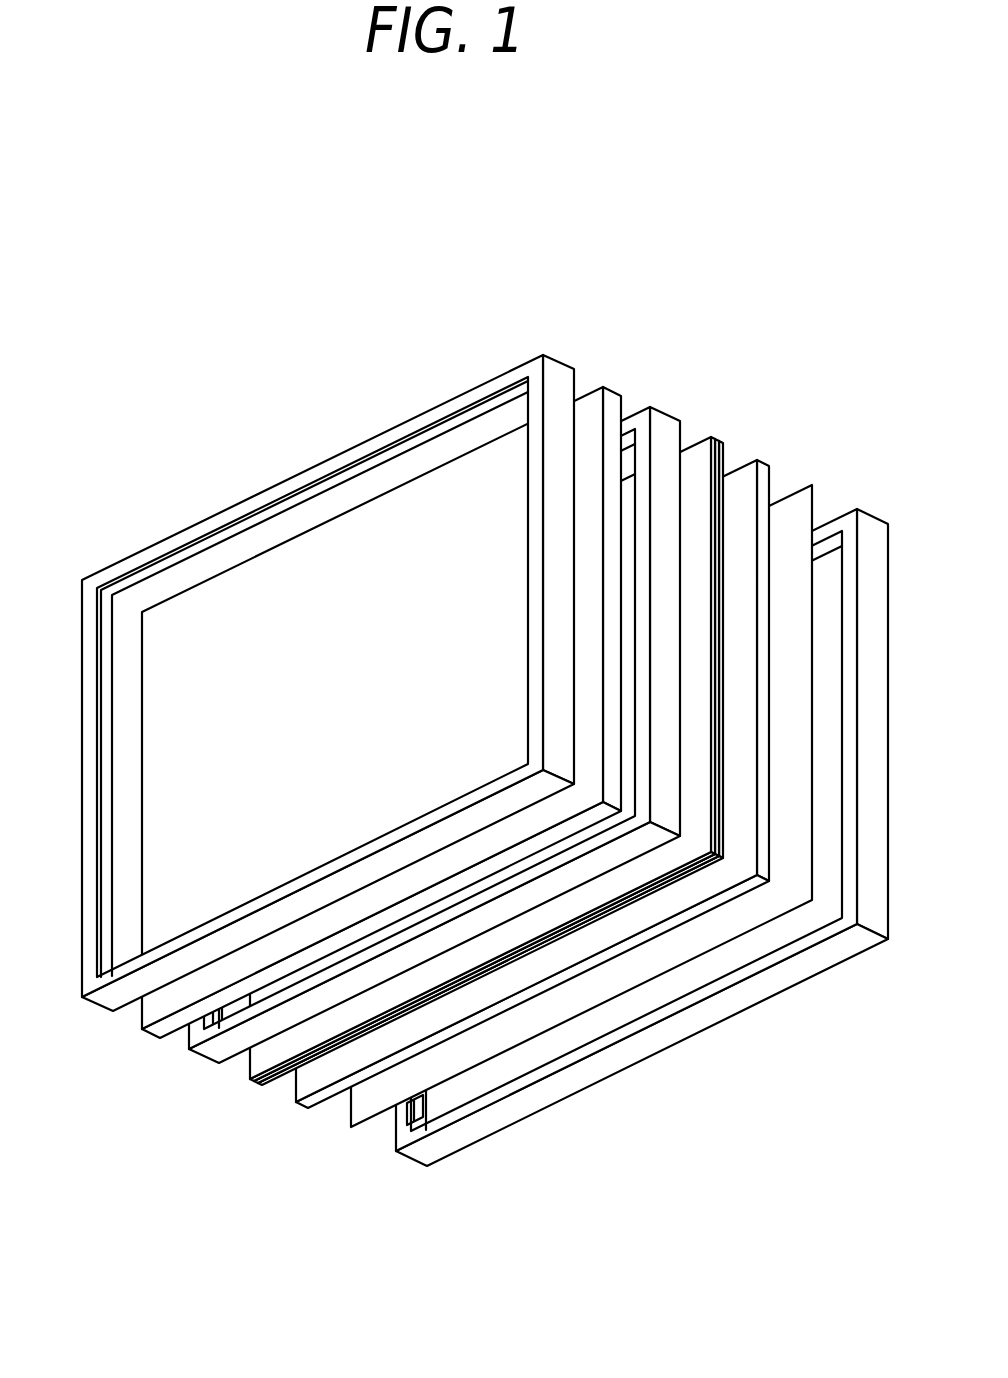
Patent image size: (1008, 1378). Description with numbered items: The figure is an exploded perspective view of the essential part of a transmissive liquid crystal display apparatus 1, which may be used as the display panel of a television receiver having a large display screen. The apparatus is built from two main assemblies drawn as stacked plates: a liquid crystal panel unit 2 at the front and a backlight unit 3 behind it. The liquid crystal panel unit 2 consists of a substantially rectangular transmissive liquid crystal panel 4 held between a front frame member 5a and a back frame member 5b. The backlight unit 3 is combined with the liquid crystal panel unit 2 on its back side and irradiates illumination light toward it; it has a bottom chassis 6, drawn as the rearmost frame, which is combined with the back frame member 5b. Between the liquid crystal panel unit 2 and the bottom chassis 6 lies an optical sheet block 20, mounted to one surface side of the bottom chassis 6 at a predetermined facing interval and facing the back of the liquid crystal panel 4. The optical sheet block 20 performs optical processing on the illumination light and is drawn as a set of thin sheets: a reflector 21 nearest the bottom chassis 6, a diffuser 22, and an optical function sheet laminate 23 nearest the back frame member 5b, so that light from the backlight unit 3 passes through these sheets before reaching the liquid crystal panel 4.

The liquid crystal display apparatus 1 is at (559, 246).
The liquid crystal panel unit 2 is at (366, 781).
The backlight unit 3 is at (545, 882).
The liquid crystal panel 4 is at (157, 1030).
The front frame member 5a is at (320, 735).
The back frame member 5b is at (190, 1030).
The bottom chassis 6 is at (437, 1156).
The optical sheet block 20 is at (272, 1135).
The reflector 21 is at (375, 1102).
The diffuser 22 is at (297, 1102).
The optical function sheet laminate 23 is at (263, 1086).